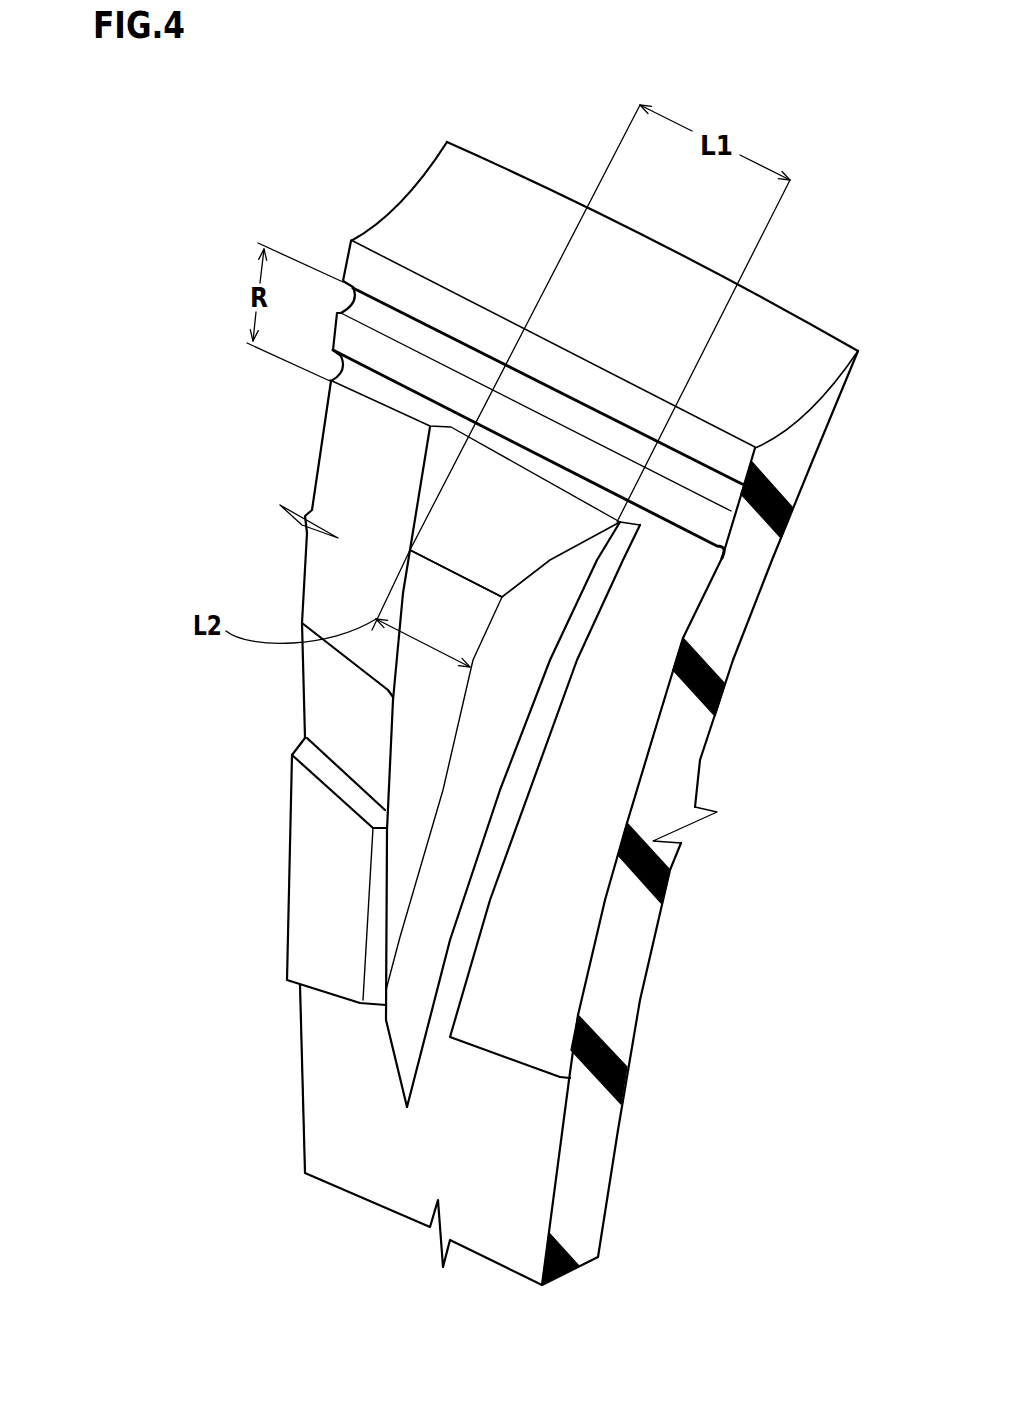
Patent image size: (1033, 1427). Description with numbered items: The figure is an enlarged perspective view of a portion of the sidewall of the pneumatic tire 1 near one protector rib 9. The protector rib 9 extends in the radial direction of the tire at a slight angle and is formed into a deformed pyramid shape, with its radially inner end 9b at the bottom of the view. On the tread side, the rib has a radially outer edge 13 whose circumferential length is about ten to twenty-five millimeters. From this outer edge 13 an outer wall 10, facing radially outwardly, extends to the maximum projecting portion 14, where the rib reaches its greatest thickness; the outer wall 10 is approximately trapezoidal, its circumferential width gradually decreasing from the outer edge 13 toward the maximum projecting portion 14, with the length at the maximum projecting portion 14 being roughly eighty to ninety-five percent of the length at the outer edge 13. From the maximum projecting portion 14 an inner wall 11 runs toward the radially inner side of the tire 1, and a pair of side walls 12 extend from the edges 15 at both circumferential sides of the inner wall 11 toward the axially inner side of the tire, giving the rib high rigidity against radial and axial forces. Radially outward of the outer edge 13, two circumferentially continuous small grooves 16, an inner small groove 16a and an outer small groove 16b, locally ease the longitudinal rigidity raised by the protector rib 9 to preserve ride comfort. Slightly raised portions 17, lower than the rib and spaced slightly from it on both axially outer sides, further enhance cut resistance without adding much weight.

The pneumatic tire 1 is at (808, 273).
The protector rib 9 is at (418, 767).
The radially inner end 9b is at (407, 1107).
The outer wall 10 is at (473, 537).
The inner wall 11 is at (327, 940).
The side wall 12 is at (447, 840).
The radially outer edge 13 is at (577, 485).
The maximum projecting portion 14 is at (473, 580).
The edge of inner wall 15 is at (392, 718).
The small groove 16 is at (553, 120).
The inner small groove 16a is at (402, 402).
The outer small groove 16b is at (460, 355).
The slightly raised portion 17 is at (325, 940).